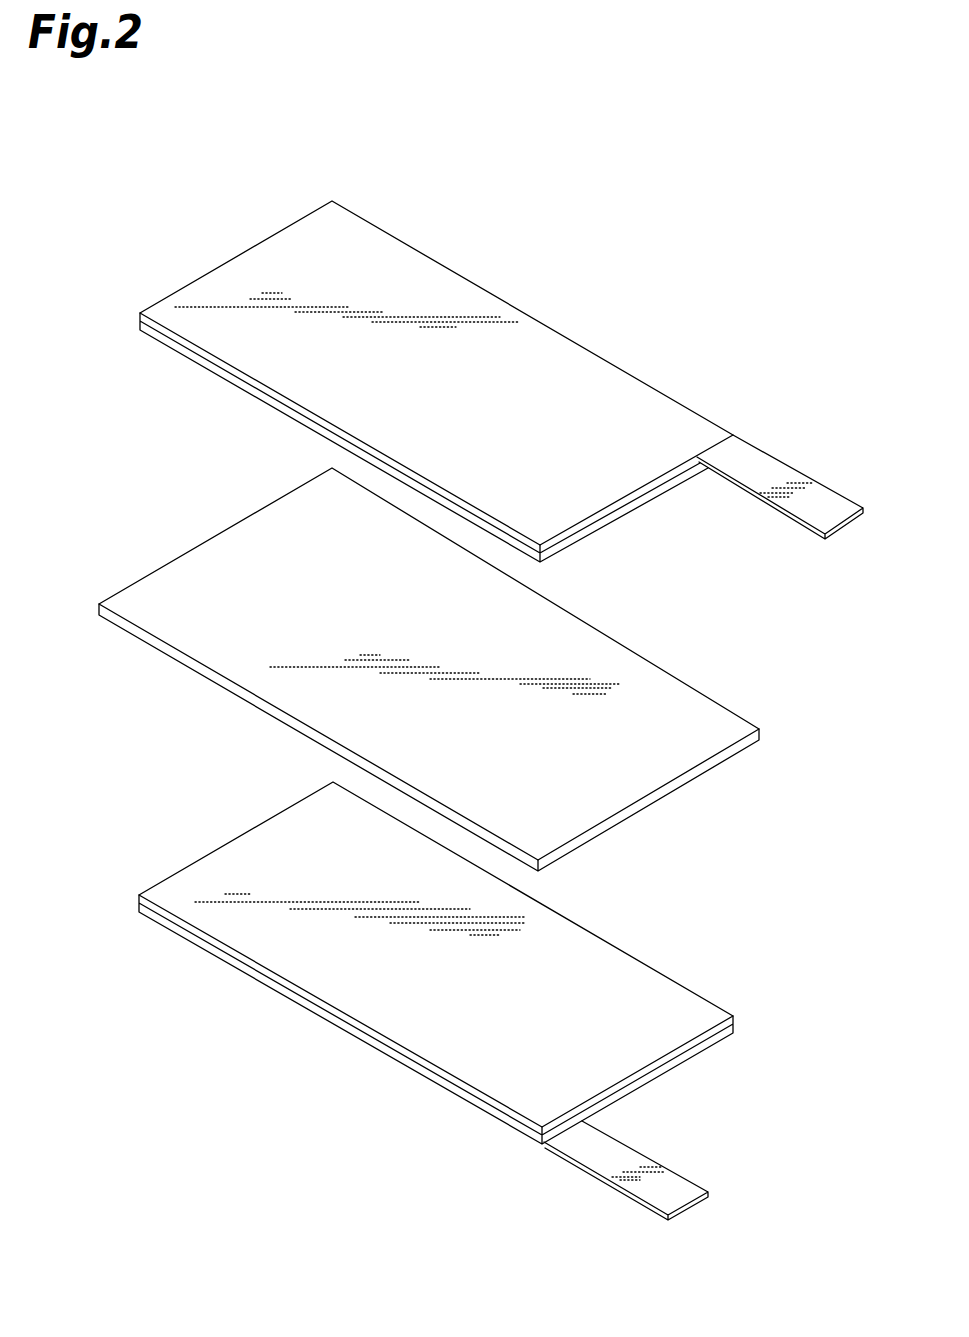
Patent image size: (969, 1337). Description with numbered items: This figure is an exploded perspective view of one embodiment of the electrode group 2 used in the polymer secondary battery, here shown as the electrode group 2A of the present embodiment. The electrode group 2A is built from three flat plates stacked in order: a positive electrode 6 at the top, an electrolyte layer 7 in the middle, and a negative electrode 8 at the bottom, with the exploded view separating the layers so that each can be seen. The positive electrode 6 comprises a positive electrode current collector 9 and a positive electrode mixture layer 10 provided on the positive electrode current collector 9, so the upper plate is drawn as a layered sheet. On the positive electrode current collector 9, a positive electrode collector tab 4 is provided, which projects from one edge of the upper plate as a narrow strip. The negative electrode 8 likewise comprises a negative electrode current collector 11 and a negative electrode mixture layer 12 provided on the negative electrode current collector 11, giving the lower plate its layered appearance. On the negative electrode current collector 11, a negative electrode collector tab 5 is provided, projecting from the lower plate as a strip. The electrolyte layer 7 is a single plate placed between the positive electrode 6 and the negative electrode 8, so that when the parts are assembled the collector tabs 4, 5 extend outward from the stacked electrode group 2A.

The electrode group 2 is at (485, 683).
The electrode group 2A is at (730, 209).
The positive electrode collector tab 4 is at (835, 511).
The negative electrode collector tab 5 is at (670, 1195).
The positive electrode 6 is at (705, 367).
The electrolyte layer 7 is at (702, 710).
The negative electrode 8 is at (705, 967).
The positive electrode current collector 9 is at (373, 240).
The positive electrode mixture layer 10 is at (620, 513).
The negative electrode current collector 11 is at (420, 1070).
The negative electrode mixture layer 12 is at (658, 1032).